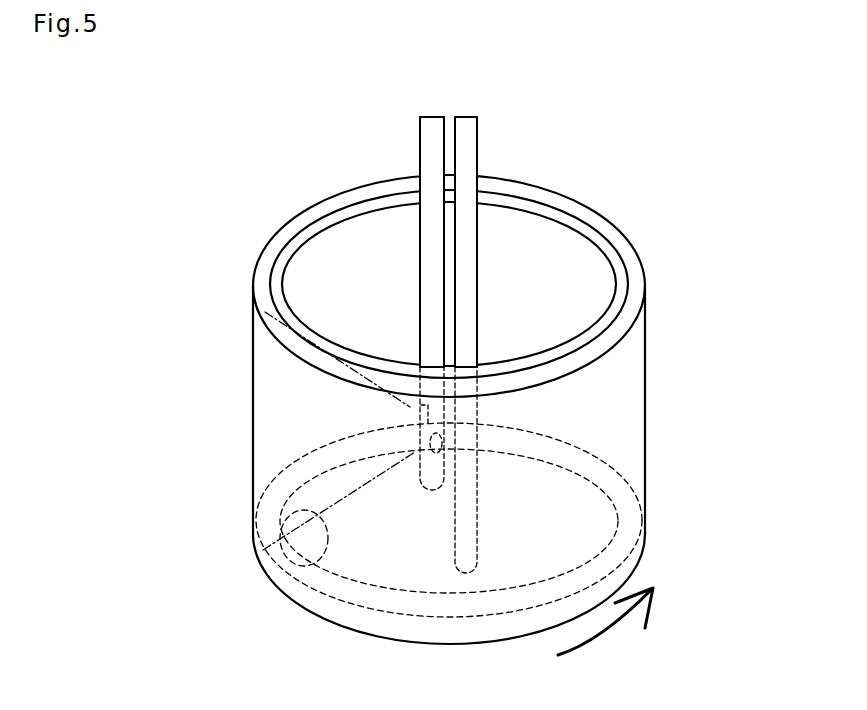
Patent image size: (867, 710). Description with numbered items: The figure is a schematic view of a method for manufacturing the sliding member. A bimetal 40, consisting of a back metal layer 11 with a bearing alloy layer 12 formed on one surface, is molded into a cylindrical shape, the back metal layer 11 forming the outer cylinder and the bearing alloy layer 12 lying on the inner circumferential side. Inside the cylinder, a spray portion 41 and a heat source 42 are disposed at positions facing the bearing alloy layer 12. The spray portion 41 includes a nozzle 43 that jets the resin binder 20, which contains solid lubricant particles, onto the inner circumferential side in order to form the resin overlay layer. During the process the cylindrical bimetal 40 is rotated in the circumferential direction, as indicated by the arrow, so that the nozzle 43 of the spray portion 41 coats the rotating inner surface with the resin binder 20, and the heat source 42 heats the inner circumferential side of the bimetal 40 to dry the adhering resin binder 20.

The back metal layer 11 is at (272, 250).
The bearing alloy layer 12 is at (348, 212).
The resin binder 20 is at (297, 567).
The bimetal 40 is at (517, 411).
The spray portion 41 is at (420, 134).
The heat source 42 is at (478, 143).
The nozzle 43 is at (437, 452).